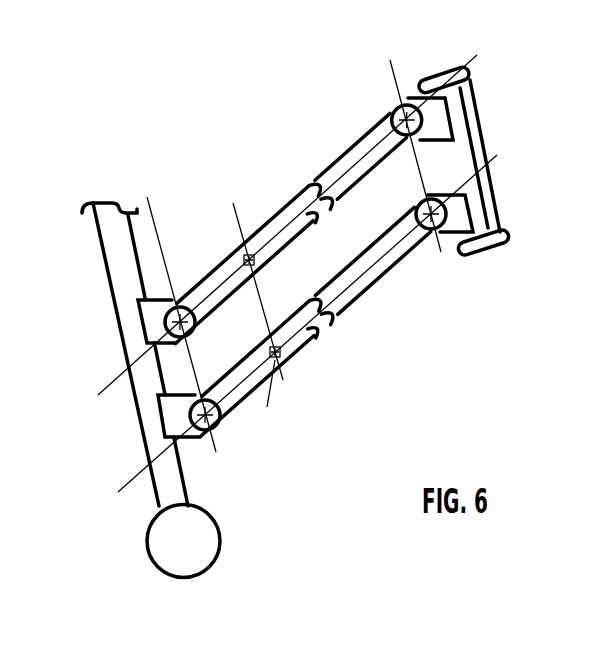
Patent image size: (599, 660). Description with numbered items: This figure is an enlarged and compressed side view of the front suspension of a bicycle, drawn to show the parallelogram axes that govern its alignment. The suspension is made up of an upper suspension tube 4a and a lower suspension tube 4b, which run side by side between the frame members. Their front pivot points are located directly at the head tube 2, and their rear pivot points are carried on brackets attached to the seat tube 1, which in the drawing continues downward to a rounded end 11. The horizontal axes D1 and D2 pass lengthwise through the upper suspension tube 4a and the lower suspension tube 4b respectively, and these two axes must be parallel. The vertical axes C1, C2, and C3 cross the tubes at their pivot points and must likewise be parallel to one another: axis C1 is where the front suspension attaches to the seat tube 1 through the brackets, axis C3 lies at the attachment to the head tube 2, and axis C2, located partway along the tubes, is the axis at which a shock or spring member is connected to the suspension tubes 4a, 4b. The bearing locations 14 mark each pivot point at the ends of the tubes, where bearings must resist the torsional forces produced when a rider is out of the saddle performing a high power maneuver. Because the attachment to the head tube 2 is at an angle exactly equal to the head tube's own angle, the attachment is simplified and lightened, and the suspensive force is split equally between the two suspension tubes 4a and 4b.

The seat tube 1 is at (118, 262).
The head tube 2 is at (458, 149).
The upper suspension tube 4a is at (338, 167).
The lower suspension tube 4b is at (367, 289).
The knob 11 is at (184, 577).
The bearing locations 14 is at (244, 260).
The vertical axis C1 is at (174, 310).
The vertical axis C2 is at (250, 287).
The vertical axis C3 is at (409, 142).
The horizontal axis D1 is at (272, 235).
The horizontal axis D2 is at (292, 334).